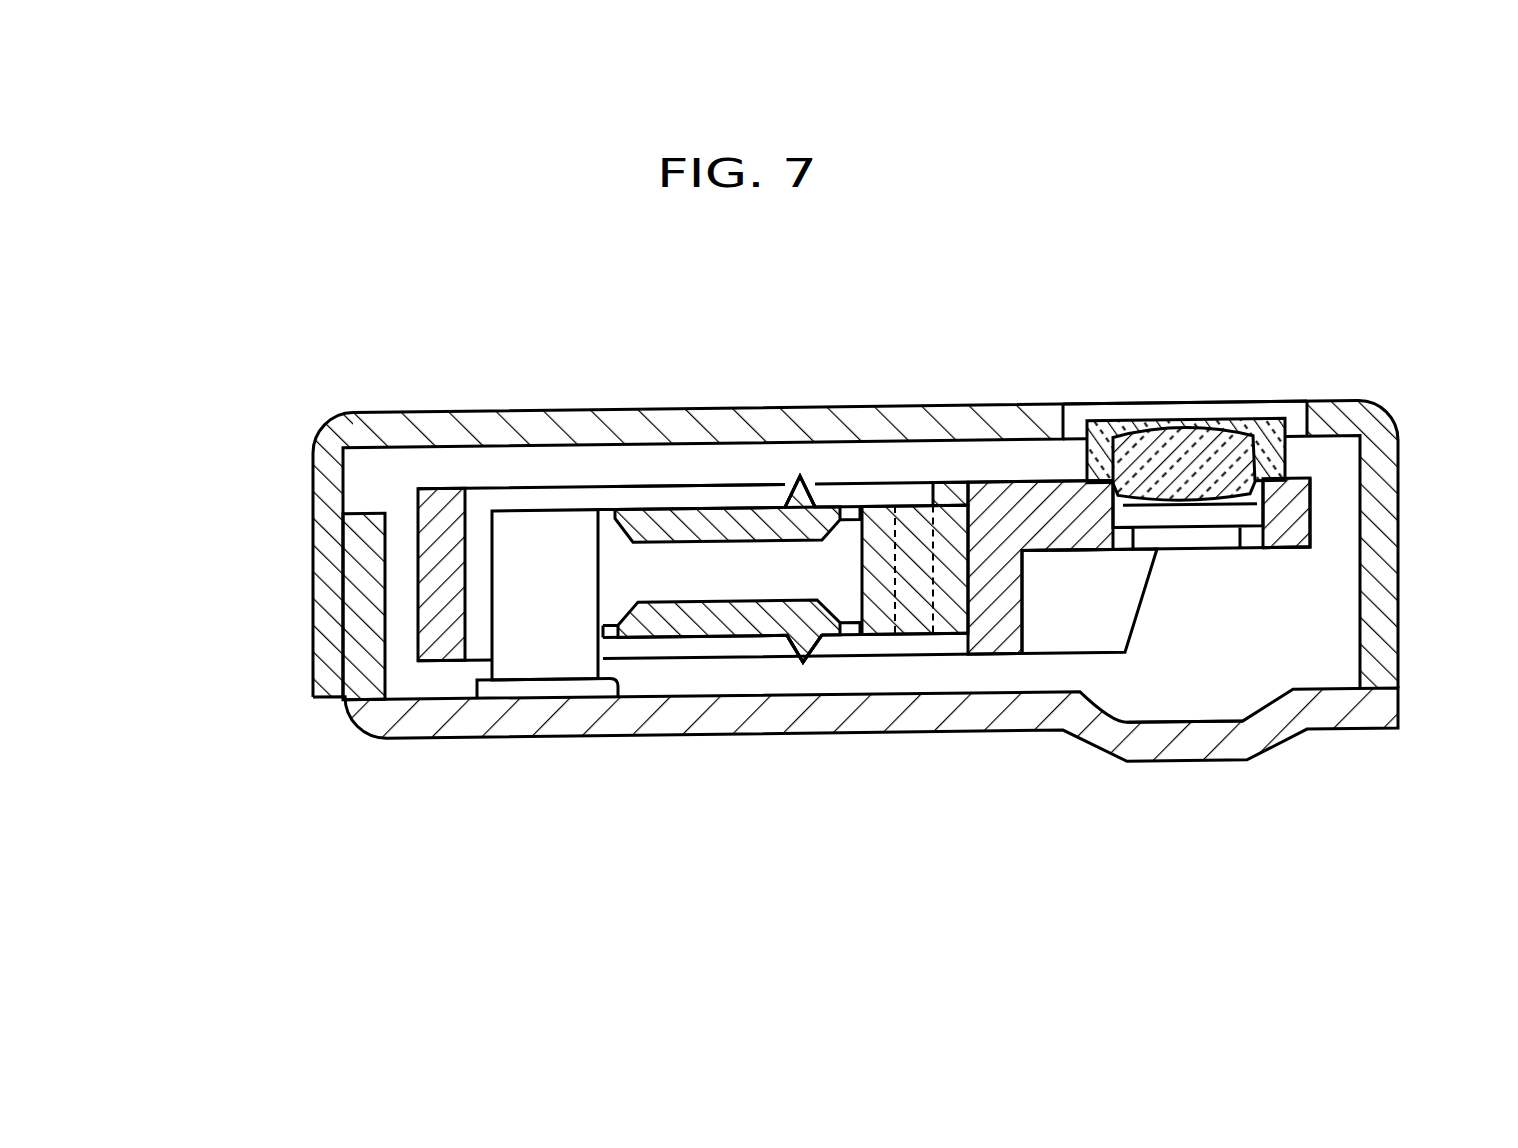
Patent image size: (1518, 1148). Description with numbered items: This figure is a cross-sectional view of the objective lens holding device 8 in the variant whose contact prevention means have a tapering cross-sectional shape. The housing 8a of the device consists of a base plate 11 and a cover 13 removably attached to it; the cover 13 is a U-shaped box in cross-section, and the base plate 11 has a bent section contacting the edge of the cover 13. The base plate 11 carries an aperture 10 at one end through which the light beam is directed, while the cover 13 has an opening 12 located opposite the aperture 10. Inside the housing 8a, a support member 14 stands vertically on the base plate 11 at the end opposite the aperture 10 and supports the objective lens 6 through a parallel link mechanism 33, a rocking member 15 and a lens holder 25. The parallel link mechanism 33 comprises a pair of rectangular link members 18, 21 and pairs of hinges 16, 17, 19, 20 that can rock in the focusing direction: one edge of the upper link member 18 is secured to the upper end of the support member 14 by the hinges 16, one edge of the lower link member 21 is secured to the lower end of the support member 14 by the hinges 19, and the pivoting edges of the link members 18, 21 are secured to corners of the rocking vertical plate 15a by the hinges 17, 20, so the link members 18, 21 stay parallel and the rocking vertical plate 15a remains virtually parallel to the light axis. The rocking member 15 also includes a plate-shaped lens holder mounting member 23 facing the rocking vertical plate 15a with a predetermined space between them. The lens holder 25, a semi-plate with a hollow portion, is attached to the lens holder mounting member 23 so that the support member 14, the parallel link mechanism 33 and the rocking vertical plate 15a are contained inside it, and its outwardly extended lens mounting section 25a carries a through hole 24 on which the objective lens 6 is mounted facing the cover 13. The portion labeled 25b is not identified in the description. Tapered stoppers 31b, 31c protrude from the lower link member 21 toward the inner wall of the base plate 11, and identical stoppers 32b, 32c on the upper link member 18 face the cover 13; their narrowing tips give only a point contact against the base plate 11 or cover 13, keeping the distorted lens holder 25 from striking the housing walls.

The objective lens 6 is at (1179, 432).
The objective lens holding device 8 is at (297, 522).
The housing 8a is at (314, 687).
The aperture 10 is at (1236, 733).
The base plate 11 is at (377, 740).
The opening 12 is at (1297, 423).
The cover 13 is at (428, 400).
The support member 14 is at (513, 587).
The rocking member 15 is at (888, 643).
The rocking vertical plate 15a is at (880, 520).
The hinges 16 is at (607, 513).
The hinges 17 is at (863, 508).
The link member 18 is at (717, 517).
The hinges 19 is at (604, 640).
The hinges 20 is at (848, 637).
The link member 21 is at (680, 627).
The lens holder mounting member 23 is at (953, 655).
The through hole 24 is at (1224, 537).
The lens holder 25 is at (1317, 496).
The lens mounting section 25a is at (1292, 560).
The frame 25b is at (443, 645).
The stopper 31b is at (805, 663).
The stopper 31c is at (804, 648).
The stopper 32b is at (800, 477).
The stopper 32c is at (800, 491).
The parallel link mechanism 33 is at (659, 508).